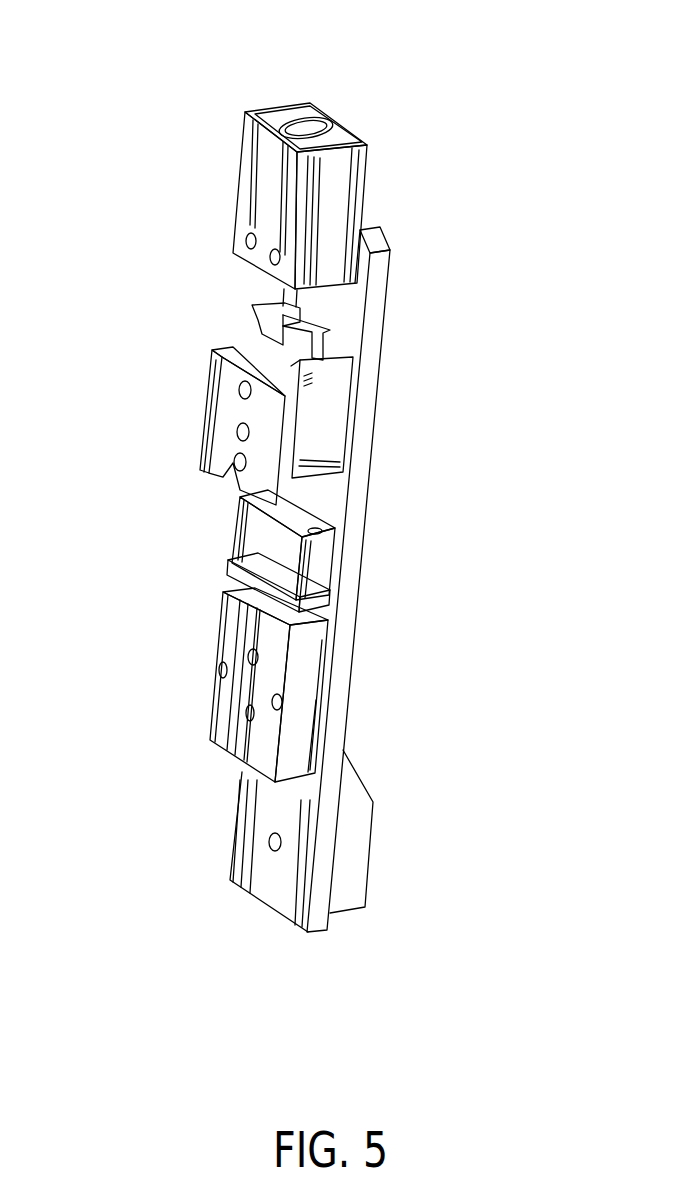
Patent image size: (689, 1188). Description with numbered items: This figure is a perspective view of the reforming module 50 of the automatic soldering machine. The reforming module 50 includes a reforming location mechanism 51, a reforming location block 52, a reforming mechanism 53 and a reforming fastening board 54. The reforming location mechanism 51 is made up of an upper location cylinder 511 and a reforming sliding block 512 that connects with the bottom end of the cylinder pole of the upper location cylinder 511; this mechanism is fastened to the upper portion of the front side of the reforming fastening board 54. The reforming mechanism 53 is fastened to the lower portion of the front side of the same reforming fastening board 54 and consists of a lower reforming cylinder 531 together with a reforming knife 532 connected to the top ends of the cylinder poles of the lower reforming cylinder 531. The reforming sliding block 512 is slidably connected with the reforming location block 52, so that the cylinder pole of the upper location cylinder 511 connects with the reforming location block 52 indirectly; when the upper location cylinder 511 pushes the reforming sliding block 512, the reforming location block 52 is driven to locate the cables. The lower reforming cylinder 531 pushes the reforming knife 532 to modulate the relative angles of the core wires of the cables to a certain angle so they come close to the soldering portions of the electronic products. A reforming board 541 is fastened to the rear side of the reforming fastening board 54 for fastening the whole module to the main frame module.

The reforming module 50 is at (97, 36).
The reforming location mechanism 51 is at (247, 307).
The upper location cylinder 511 is at (378, 195).
The reforming sliding block 512 is at (325, 462).
The reforming location block 52 is at (207, 410).
The reforming mechanism 53 is at (220, 580).
The lower reforming cylinder 531 is at (212, 707).
The reforming knife 532 is at (243, 535).
The reforming fastening board 54 is at (385, 368).
The reforming board 541 is at (375, 845).